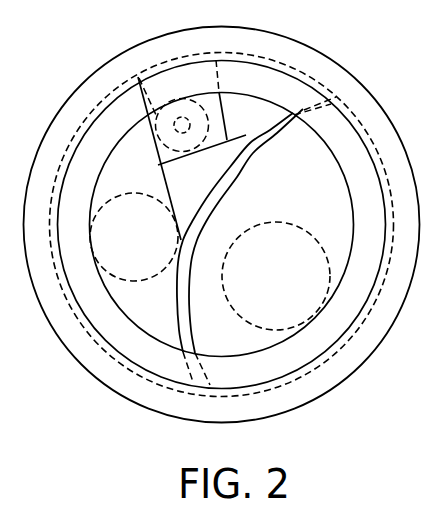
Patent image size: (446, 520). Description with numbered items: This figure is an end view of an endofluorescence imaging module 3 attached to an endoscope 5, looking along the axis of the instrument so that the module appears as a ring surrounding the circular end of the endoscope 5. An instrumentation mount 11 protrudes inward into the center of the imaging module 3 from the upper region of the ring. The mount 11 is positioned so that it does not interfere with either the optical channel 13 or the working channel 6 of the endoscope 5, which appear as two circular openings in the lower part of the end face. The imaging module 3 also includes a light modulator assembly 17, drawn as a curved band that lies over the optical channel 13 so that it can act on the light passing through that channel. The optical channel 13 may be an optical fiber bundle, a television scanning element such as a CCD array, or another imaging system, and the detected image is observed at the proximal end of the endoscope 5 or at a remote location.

The imaging module 3 is at (317, 47).
The endoscope 5 is at (363, 127).
The working channel 6 is at (142, 252).
The instrumentation mount 11 is at (173, 121).
The optical channel 13 is at (295, 291).
The light modulator assembly 17 is at (176, 313).